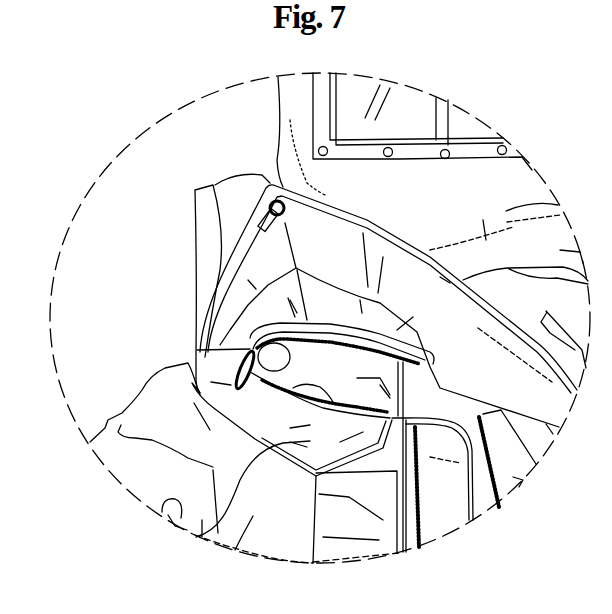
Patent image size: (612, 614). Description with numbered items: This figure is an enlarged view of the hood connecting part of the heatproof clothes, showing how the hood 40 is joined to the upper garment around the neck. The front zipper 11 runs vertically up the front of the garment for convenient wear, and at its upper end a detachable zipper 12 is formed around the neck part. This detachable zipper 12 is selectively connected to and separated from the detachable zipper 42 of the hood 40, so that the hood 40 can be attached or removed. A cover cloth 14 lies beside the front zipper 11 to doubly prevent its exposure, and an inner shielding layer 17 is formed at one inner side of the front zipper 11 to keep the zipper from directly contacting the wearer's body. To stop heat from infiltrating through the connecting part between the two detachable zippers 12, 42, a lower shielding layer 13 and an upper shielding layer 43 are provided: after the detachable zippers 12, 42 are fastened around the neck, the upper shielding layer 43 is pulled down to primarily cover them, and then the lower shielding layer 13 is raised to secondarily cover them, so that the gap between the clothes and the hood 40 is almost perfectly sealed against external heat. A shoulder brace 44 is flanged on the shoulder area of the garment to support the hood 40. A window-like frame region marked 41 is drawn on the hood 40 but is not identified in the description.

The front zipper 11 is at (423, 513).
The detachable zipper 12 is at (287, 390).
The lower shielding layer 13 is at (196, 537).
The cover cloth 14 is at (322, 520).
The inner shielding layer 17 is at (446, 509).
The hood 40 is at (503, 187).
The window frame 41 is at (390, 118).
The detachable zipper 42 is at (247, 356).
The upper shielding layer 43 is at (255, 343).
The shoulder brace 44 is at (205, 184).